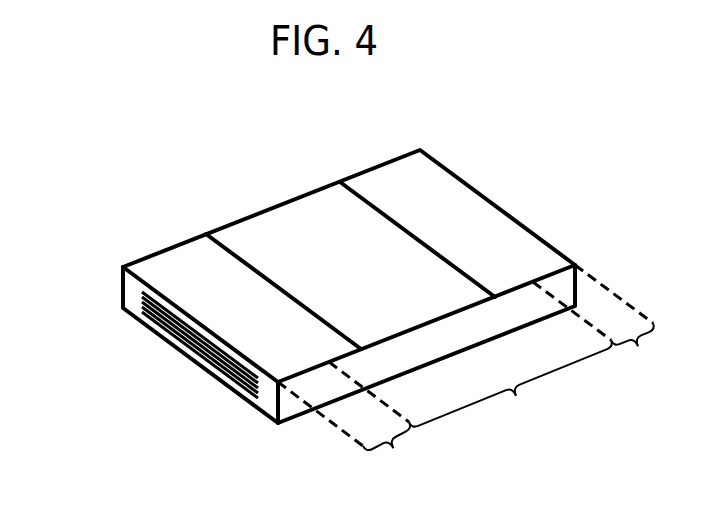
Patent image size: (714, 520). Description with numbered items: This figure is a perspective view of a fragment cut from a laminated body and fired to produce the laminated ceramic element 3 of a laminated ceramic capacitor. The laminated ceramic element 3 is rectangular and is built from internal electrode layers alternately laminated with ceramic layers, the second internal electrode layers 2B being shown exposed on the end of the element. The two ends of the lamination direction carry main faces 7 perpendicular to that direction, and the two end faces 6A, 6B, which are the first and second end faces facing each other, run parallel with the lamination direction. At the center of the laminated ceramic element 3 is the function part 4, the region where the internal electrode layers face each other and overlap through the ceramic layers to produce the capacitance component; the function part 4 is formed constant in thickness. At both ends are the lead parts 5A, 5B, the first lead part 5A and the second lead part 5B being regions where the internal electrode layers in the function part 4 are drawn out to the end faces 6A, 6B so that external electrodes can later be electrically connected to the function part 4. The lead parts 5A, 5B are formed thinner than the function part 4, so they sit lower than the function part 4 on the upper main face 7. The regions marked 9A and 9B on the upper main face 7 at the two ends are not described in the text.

The laminated ceramic element 3 is at (323, 167).
The main face 7 is at (288, 223).
The first end region of top surface 9A is at (453, 197).
The second end region of top surface 9B is at (178, 263).
The internal electrode layer 2B is at (143, 297).
The end face 6B is at (265, 400).
The end face 6A is at (578, 284).
The lead part 5A is at (595, 321).
The lead part 5B is at (345, 421).
The function part 4 is at (510, 385).